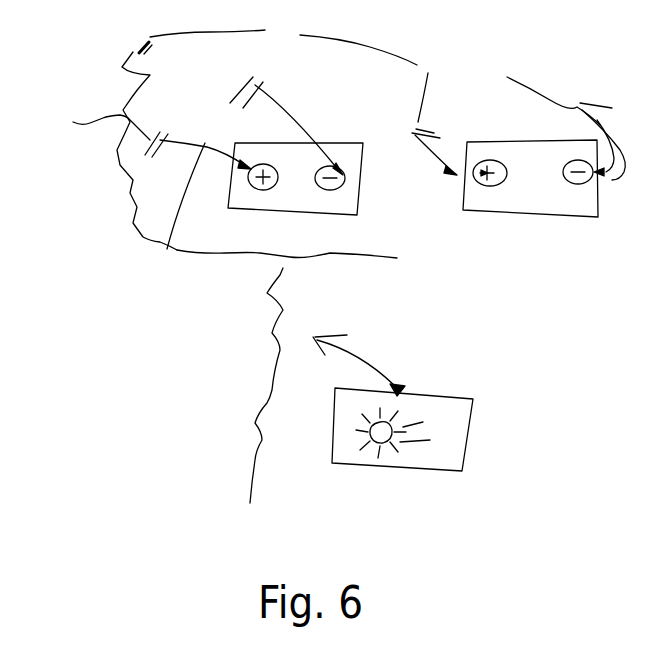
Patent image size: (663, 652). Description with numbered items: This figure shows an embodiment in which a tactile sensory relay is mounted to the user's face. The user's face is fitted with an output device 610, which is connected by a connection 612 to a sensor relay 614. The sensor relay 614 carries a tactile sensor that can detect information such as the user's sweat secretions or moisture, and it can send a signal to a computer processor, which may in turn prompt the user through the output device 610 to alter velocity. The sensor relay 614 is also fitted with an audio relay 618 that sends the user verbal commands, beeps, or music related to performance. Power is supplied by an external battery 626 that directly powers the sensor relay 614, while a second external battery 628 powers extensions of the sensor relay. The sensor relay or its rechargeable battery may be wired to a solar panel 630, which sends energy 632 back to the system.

The output device 610 is at (371, 266).
The connection 612 is at (174, 217).
The sensor relay 614 is at (143, 126).
The audio relay 618 is at (273, 63).
The external battery 626 is at (476, 212).
The external battery 628 is at (358, 197).
The solar panel 630 is at (468, 460).
The energy 632 is at (397, 388).